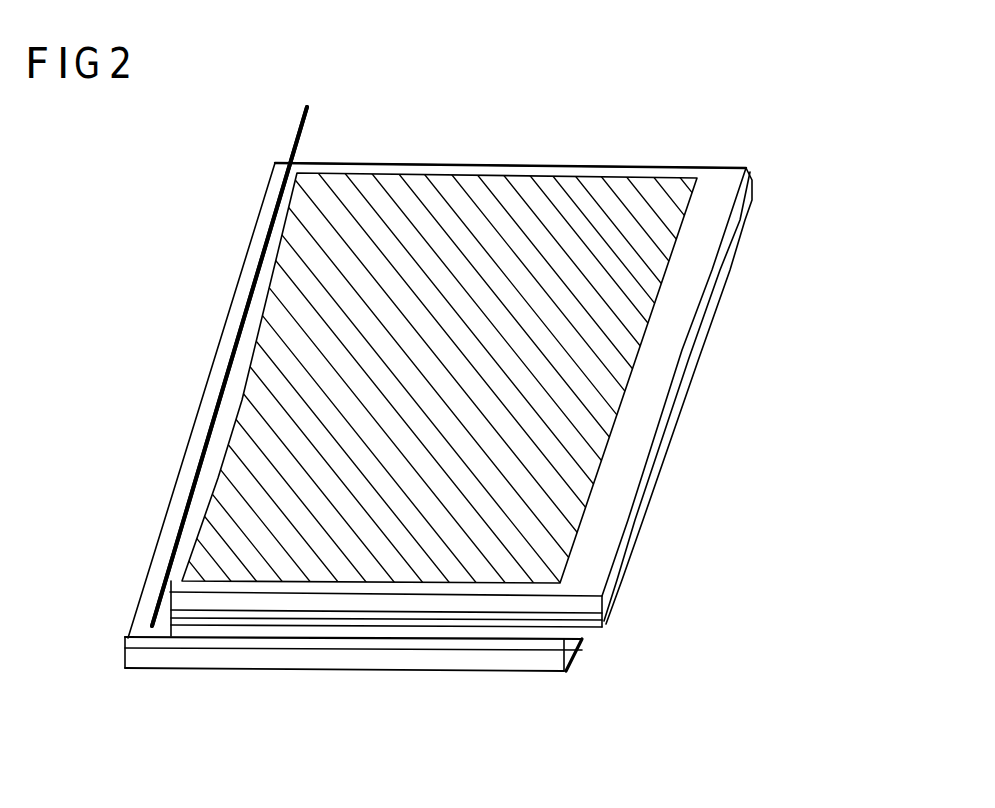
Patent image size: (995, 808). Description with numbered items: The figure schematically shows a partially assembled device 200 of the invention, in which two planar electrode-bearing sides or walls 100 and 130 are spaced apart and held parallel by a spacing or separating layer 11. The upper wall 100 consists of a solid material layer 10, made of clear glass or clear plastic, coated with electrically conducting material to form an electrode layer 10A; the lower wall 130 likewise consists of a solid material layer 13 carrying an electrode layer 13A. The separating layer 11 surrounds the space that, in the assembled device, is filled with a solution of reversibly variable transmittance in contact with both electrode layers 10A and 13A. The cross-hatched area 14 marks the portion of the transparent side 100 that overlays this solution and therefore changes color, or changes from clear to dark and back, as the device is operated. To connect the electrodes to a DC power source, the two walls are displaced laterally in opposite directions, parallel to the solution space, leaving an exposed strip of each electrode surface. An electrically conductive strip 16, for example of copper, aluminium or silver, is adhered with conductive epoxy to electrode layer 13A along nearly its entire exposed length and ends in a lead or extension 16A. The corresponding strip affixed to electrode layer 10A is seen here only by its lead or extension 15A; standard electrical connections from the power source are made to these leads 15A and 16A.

The partially assembled device 200 is at (318, 684).
The solid material layer 10 is at (727, 182).
The electrode layer 10A is at (750, 212).
The planar transparent electrode-bearing side 100 is at (720, 303).
The cross-hatched area 14 is at (600, 368).
The electrically conductive strip 16 is at (167, 583).
The lead or extension 16A is at (303, 121).
The planar electrode-bearing side 130 is at (130, 625).
The solid material layer 13 is at (123, 660).
The electrode layer 13A is at (122, 640).
The lead or extension 15A is at (583, 640).
The spacing or separating layer 11 is at (502, 635).